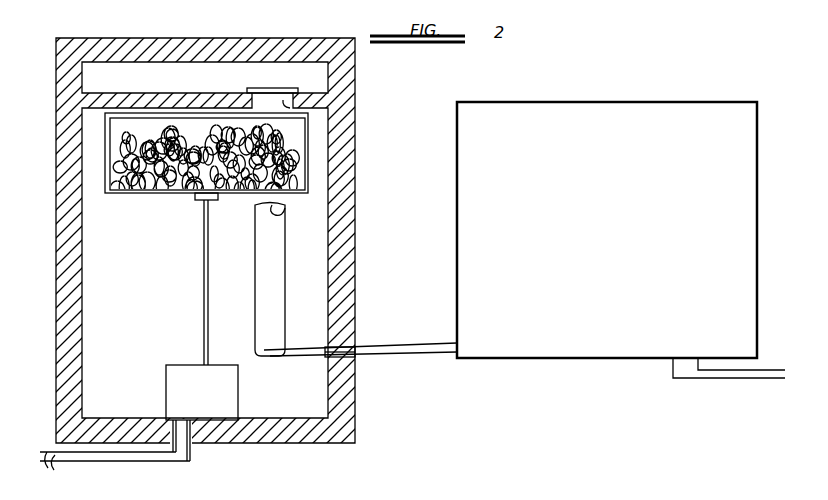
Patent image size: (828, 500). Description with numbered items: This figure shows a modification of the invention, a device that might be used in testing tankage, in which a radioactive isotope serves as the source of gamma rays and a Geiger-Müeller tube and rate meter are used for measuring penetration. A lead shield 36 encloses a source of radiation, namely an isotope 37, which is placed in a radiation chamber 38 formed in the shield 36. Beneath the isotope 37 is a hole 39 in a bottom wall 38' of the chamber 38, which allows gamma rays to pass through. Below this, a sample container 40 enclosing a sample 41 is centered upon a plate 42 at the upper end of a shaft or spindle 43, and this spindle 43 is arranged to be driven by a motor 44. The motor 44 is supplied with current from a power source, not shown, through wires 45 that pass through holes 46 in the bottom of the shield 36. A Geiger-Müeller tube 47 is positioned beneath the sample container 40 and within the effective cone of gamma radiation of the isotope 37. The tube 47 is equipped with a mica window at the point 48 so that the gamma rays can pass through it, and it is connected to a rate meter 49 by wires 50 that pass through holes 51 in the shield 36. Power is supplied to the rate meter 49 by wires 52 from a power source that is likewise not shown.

The lead shield 36 is at (355, 66).
The isotope 37 is at (258, 88).
The radiation chamber 38 is at (297, 47).
The bottom wall 38' is at (159, 84).
The hole 39 is at (290, 108).
The sample container 40 is at (310, 176).
The sample 41 is at (156, 192).
The plate 42 is at (197, 200).
The shaft or spindle 43 is at (204, 232).
The motor 44 is at (166, 387).
The wires 45 is at (115, 468).
The holes 46 is at (186, 446).
The Geiger-Müeller tube 47 is at (277, 256).
The point 48 is at (281, 223).
The rate meter 49 is at (572, 358).
The wires 50 is at (408, 347).
The holes 51 is at (352, 349).
The wires 52 is at (766, 376).